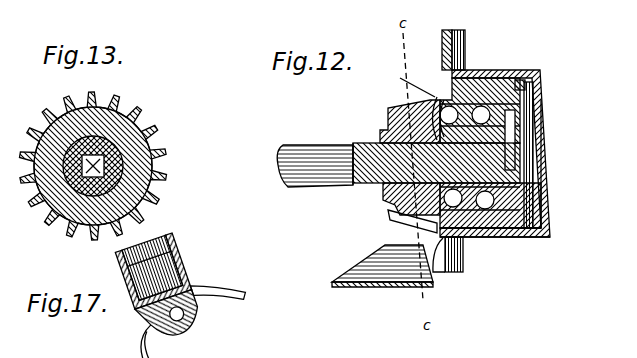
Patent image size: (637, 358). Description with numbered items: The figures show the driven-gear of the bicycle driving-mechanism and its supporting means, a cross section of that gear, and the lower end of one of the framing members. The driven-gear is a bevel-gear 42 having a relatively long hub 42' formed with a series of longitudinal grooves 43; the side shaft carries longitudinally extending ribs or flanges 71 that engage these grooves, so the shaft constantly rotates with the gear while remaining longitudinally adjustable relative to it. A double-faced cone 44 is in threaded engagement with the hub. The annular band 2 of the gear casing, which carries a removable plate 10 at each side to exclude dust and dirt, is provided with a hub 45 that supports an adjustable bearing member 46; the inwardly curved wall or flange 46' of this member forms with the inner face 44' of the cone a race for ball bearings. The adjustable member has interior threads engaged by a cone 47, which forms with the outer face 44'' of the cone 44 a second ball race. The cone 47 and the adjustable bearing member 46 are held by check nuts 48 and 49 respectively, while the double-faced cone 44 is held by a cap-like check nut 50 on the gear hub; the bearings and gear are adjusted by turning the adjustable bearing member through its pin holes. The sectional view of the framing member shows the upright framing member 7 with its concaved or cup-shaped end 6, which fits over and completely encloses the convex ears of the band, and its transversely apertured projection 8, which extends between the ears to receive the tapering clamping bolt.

In FIG. 12, the annular band 2 is at (465, 42).
In FIG. 13, the bevel-gear 42 is at (94, 166).
In FIG. 12, the bevel-gear 42 is at (427, 94).
In FIG. 12, the hub of the bevel-gear 42' is at (561, 164).
In FIG. 13, the longitudinal grooves 43 is at (106, 166).
In FIG. 12, the longitudinal grooves 43 is at (423, 83).
In FIG. 12, the double-faced cone 44 is at (461, 256).
In FIG. 12, the inner face of the cone 44' is at (383, 226).
In FIG. 12, the outer face of the cone 44'' is at (490, 279).
In FIG. 12, the hub 45 is at (505, 77).
In FIG. 12, the adjustable bearing member 46 is at (490, 138).
In FIG. 12, the inwardly curved wall or flange 46' is at (402, 85).
In FIG. 12, the cone 47 is at (508, 240).
In FIG. 12, the check nut 48 is at (547, 103).
In FIG. 12, the check nut 49 is at (522, 74).
In FIG. 12, the check nut 50 is at (515, 133).
In FIG. 12, the removable plate 10 is at (382, 278).
In FIG. 13, the longitudinally extending ribs or flanges 71 is at (150, 142).
In FIG. 17, the upright framing member 7 is at (192, 260).
In FIG. 17, the cup-shaped end 6 is at (236, 322).
In FIG. 17, the transversely apertured projection 8 is at (180, 336).